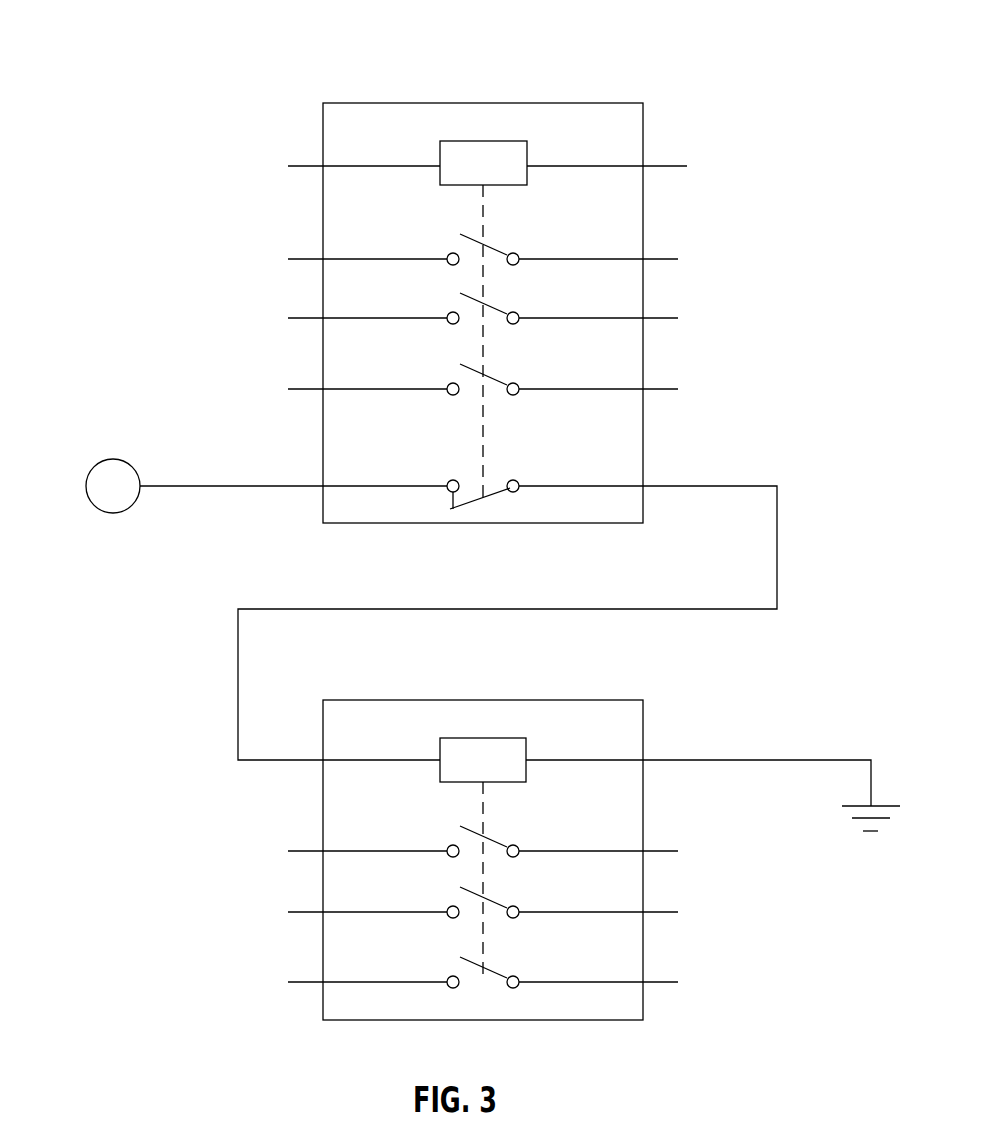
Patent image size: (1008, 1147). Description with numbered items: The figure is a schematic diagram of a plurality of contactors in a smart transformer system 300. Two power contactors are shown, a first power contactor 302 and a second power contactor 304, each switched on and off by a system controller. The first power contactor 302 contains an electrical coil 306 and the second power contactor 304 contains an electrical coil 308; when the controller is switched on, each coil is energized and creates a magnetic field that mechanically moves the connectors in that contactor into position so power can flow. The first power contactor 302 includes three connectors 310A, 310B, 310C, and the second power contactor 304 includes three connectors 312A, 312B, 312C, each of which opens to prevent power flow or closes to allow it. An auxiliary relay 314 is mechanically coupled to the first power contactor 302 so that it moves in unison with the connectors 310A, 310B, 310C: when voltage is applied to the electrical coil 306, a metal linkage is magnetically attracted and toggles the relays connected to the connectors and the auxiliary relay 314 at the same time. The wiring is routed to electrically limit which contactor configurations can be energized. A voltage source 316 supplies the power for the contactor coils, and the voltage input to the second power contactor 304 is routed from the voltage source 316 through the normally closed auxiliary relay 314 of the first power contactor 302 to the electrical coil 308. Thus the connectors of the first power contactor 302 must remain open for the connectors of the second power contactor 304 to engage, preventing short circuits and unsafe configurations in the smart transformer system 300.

The smart transformer system 300 is at (232, 38).
The Power Contactor 1 302 is at (393, 103).
The Power Contactor 2 304 is at (393, 700).
The electrical coil 306 is at (511, 141).
The electrical coil 308 is at (511, 738).
The connector 310A is at (218, 262).
The connector 310B is at (218, 321).
The connector 310C is at (218, 383).
The connector 312A is at (233, 860).
The connector 312B is at (233, 919).
The connector 312C is at (233, 982).
The auxiliary relay 314 is at (519, 482).
The voltage source 316 is at (100, 463).